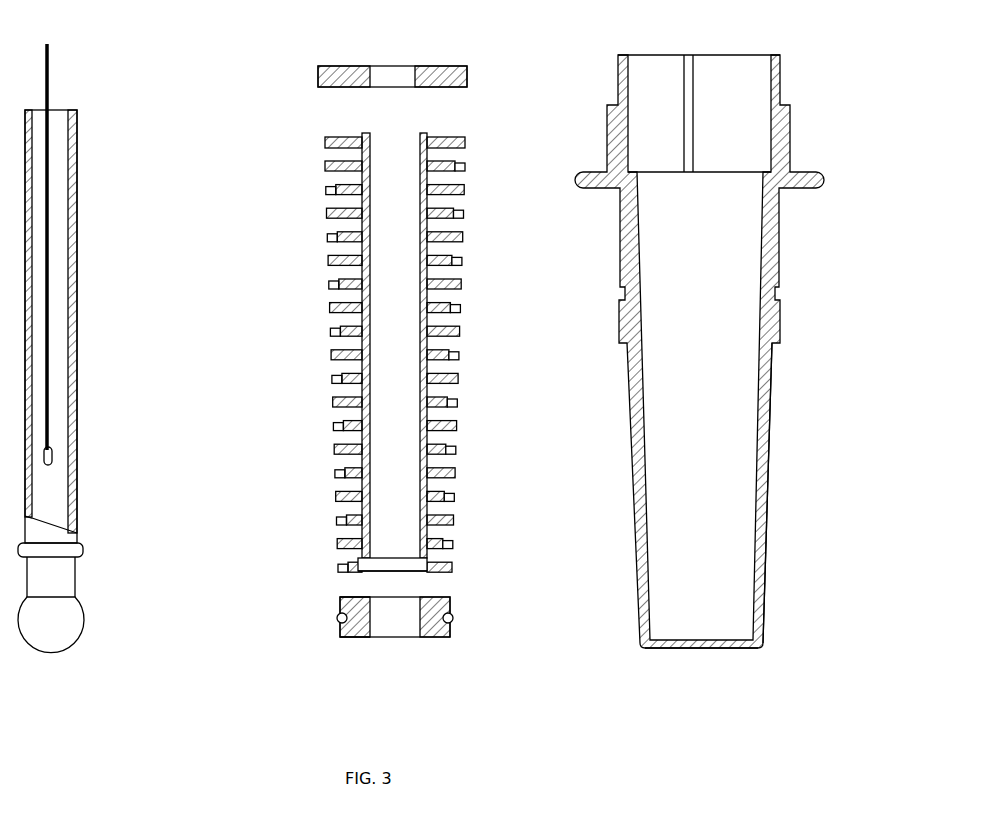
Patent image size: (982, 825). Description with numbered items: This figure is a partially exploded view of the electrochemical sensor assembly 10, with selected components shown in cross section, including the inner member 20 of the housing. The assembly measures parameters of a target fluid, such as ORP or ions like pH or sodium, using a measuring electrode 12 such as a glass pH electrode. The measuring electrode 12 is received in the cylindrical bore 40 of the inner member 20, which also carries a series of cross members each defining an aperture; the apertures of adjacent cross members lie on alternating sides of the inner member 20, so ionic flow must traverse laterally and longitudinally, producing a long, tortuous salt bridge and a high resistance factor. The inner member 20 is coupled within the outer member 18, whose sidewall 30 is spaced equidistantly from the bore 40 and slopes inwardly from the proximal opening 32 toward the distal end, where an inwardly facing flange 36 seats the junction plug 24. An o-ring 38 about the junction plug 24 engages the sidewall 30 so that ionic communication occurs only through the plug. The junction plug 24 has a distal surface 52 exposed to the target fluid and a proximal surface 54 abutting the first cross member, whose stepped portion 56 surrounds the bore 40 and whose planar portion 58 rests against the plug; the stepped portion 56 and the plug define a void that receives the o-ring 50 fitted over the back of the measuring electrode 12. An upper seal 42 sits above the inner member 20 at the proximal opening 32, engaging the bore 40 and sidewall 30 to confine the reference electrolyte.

The electrochemical sensor assembly 10 is at (840, 48).
The measuring electrode 12 is at (89, 348).
The outer member 18 is at (823, 227).
The inner member 20 is at (219, 242).
The junction plug 24 is at (437, 637).
The sidewall 30 is at (770, 432).
The proximal opening 32 is at (655, 64).
The inwardly facing flange 36 is at (746, 650).
The o-ring 38 is at (337, 617).
The cylindrical bore 40 is at (421, 213).
The upper seal 42 is at (461, 67).
The o-ring 50 is at (80, 553).
The distal surface 52 is at (357, 638).
The proximal surface 54 is at (362, 597).
The stepped portion 56 is at (428, 573).
The planar portion 58 is at (438, 571).